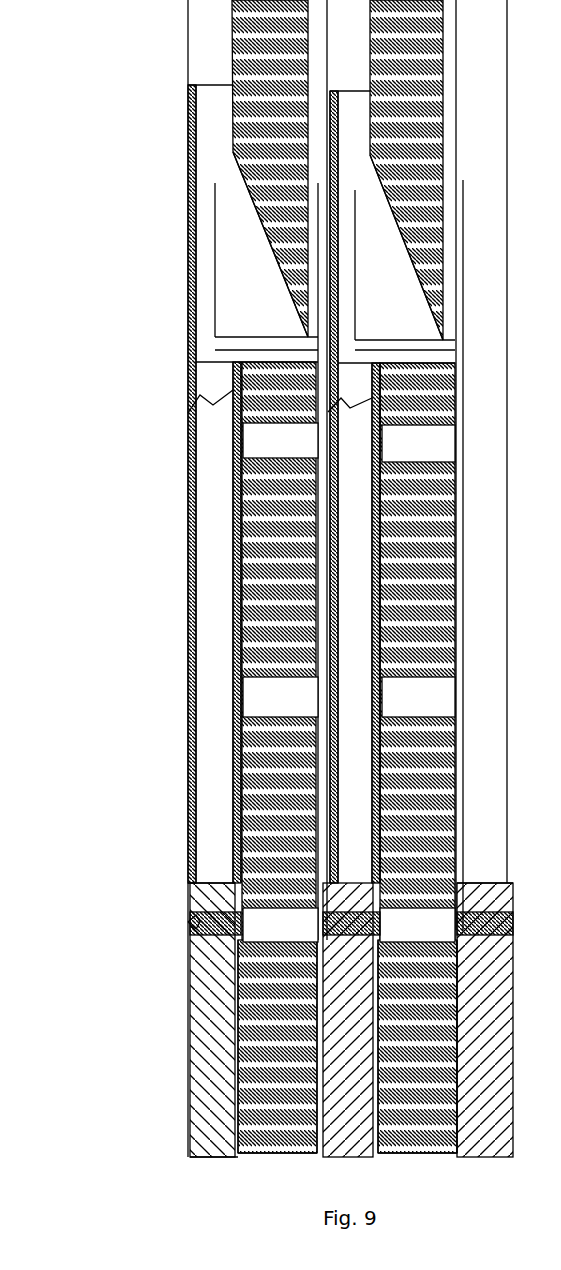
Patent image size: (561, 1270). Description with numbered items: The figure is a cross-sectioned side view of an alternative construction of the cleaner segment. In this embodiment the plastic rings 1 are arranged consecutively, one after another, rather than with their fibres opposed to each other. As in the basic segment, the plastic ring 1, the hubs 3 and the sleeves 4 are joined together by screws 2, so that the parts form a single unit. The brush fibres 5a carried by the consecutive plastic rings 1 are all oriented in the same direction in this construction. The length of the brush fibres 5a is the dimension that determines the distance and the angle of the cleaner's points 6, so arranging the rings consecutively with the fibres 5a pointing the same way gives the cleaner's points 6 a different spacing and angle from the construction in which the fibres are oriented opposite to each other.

The plastic ring 1 is at (200, 38).
The screw 2 is at (198, 923).
The hub 3 is at (240, 450).
The sleeve 4 is at (247, 702).
The brush fibre 5a is at (275, 565).
The cleaner's point 6 is at (262, 218).